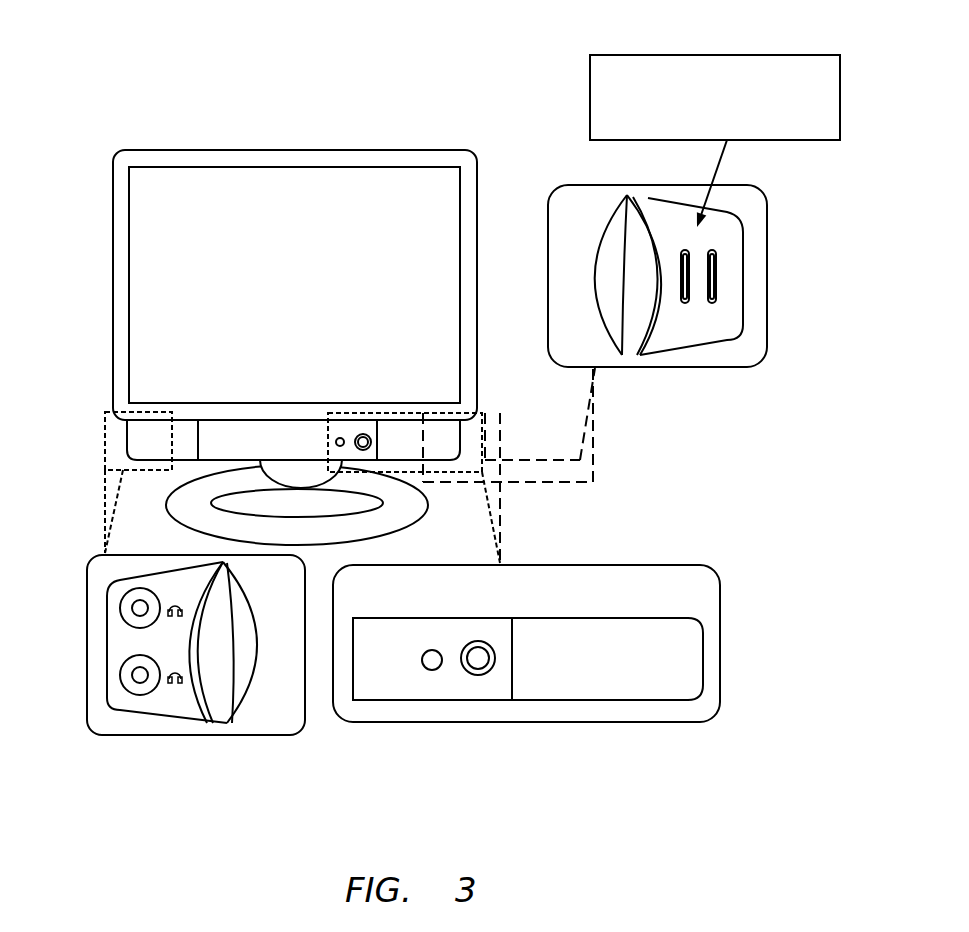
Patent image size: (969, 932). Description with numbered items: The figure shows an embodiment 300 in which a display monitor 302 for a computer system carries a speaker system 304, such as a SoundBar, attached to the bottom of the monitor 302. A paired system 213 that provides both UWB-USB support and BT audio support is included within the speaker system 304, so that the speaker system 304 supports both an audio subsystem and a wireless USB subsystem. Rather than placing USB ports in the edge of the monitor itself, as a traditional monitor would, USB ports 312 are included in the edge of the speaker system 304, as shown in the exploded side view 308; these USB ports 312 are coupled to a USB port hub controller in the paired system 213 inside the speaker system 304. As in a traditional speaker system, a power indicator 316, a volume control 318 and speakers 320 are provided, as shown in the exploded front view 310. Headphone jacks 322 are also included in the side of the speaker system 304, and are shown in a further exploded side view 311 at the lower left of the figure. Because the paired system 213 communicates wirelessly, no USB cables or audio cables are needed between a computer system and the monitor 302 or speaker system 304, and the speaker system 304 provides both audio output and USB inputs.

The embodiment 300 is at (112, 50).
The paired system 213 is at (590, 95).
The display monitor 302 is at (112, 317).
The speaker system 304 is at (183, 462).
The exploded side view 308 is at (637, 367).
The USB ports 312 is at (685, 303).
The audio module 311 is at (243, 735).
The headphone jacks 322 is at (128, 673).
The exploded front view 310 is at (630, 722).
The speakers 320 is at (627, 618).
The power indicator 316 is at (432, 672).
The volume control 318 is at (478, 675).